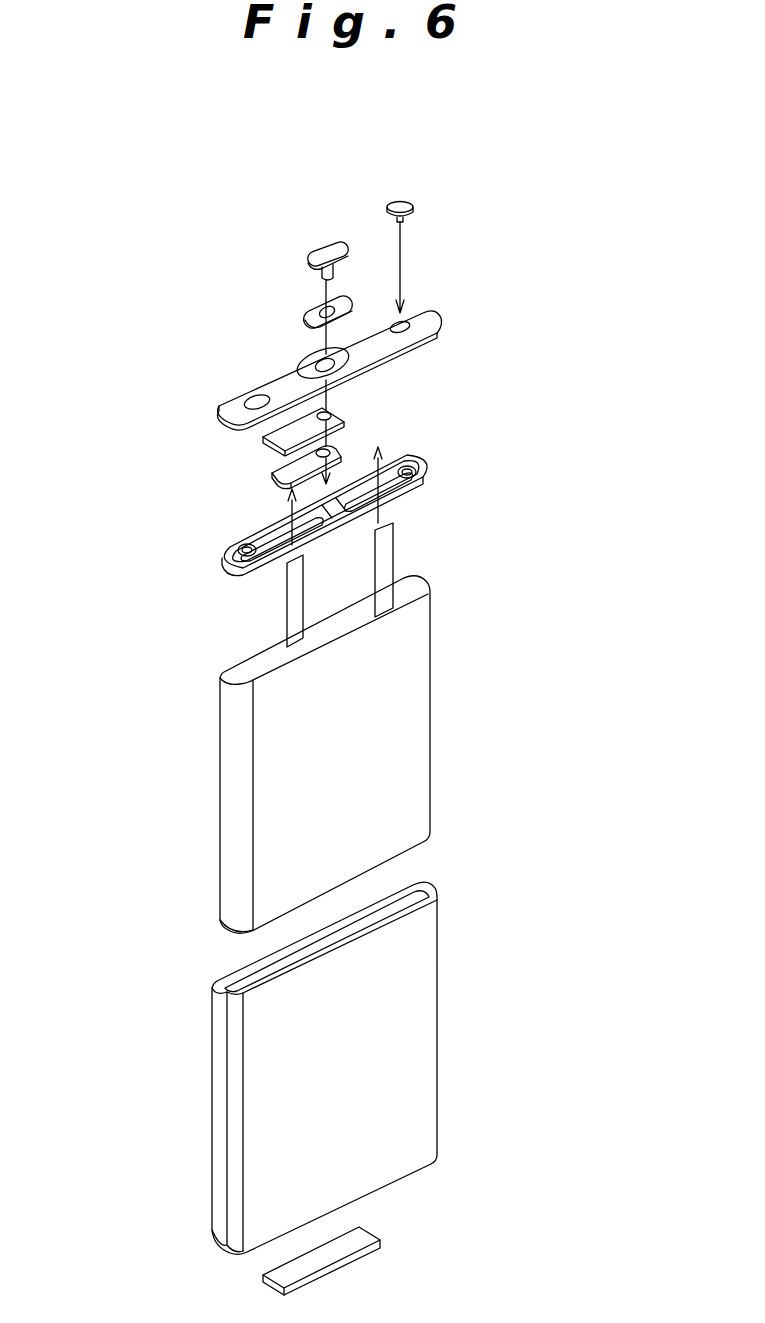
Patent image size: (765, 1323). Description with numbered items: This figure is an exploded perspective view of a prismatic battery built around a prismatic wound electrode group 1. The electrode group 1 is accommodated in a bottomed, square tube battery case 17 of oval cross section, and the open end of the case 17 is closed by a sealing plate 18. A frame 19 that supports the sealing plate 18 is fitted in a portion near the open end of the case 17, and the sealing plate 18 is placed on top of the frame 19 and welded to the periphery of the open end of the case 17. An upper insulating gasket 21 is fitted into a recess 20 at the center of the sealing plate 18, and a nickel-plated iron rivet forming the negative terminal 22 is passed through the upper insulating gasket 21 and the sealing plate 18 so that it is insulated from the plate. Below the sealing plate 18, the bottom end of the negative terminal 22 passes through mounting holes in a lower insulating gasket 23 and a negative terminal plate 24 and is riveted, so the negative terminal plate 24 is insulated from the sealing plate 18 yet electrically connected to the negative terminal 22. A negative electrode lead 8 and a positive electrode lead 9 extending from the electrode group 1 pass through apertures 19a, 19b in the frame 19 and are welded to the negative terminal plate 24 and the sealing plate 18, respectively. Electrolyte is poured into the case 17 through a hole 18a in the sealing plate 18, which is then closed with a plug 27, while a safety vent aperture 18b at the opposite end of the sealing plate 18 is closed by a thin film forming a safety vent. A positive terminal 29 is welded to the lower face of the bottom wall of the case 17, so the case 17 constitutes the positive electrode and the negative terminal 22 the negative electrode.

The prismatic wound electrode group 1 is at (400, 762).
The negative electrode lead 8 is at (295, 594).
The positive electrode lead 9 is at (386, 558).
The battery case 17 is at (418, 1012).
The sealing plate 18 is at (343, 342).
The hole 18a is at (417, 308).
The safety vent aperture 18b is at (248, 392).
The frame 19 is at (292, 502).
The aperture 19a is at (240, 530).
The aperture 19b is at (417, 441).
The recess 20 is at (308, 362).
The upper insulating gasket 21 is at (301, 317).
The negative terminal 22 is at (324, 247).
The lower insulating gasket 23 is at (262, 443).
The negative terminal plate 24 is at (267, 470).
The plug 27 is at (411, 194).
The positive terminal 29 is at (372, 1235).